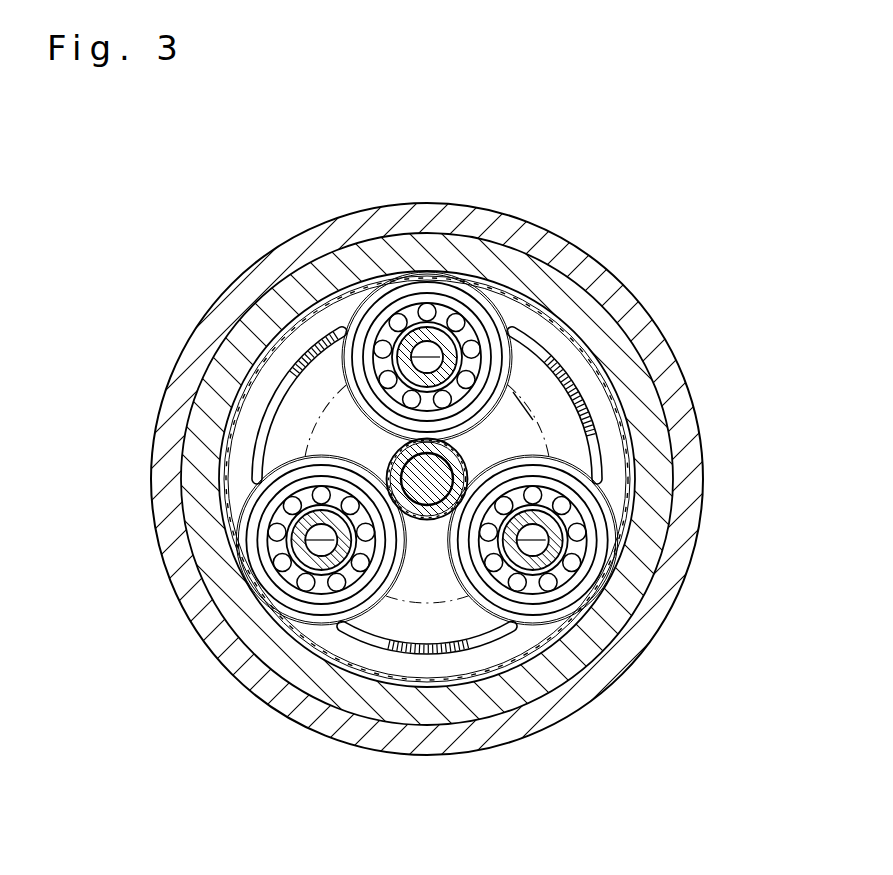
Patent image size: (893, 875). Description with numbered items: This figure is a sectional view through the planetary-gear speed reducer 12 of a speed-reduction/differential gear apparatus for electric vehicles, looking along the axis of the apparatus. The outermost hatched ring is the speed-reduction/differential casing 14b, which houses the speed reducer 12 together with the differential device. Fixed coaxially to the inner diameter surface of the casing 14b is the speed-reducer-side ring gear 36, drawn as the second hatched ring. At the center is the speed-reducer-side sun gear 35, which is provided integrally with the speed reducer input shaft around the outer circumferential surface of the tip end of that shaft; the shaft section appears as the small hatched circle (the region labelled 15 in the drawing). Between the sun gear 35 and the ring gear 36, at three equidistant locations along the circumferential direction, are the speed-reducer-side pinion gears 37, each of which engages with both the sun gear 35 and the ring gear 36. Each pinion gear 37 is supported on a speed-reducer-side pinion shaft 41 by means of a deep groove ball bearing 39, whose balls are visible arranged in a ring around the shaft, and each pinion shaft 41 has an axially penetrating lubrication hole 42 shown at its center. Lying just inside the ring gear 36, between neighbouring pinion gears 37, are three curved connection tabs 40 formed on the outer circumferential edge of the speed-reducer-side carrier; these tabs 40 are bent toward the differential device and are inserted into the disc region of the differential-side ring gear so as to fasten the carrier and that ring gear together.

The planetary-gear speed reducer 12 is at (238, 323).
The speed-reduction/differential casing 14b is at (262, 288).
The sun gear shaft 15 is at (430, 493).
The speed-reducer-side sun gear 35 is at (462, 458).
The speed-reducer-side ring gear 36 is at (578, 303).
The speed-reducer-side pinion gear 37 is at (487, 320).
The deep groove ball bearing 39 is at (425, 306).
The connection tab 40 is at (590, 420).
The speed-reducer-side pinion shaft 41 is at (408, 343).
The lubrication hole 42 is at (450, 344).